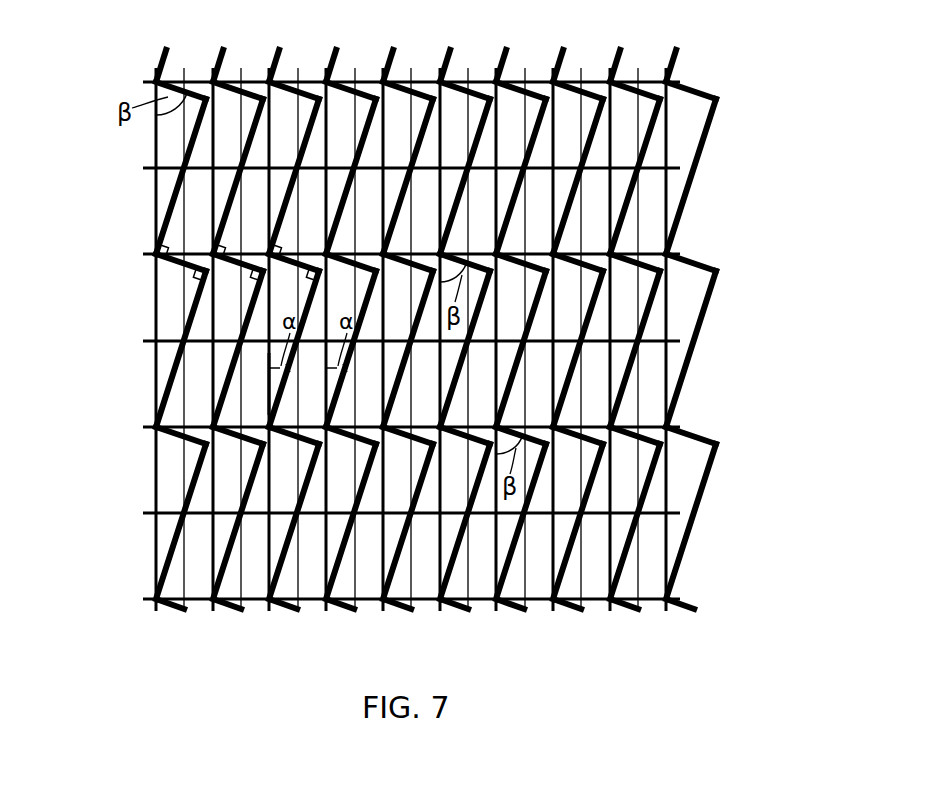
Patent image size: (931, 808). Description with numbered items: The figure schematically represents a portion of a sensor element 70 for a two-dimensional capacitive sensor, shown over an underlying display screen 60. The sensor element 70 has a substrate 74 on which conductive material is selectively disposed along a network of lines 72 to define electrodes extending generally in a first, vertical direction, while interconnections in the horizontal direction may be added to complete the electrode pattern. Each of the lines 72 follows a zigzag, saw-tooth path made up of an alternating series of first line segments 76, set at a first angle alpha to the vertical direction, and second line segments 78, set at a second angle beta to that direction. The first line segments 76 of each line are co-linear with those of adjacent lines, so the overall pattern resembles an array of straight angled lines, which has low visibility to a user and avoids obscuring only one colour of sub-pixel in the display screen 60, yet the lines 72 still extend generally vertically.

The display screen 60 is at (672, 170).
The sensor element 70 is at (60, 120).
The network of lines 72 is at (603, 58).
The substrate 74 is at (185, 63).
The first line segments 76 is at (357, 150).
The second line segments 78 is at (455, 86).